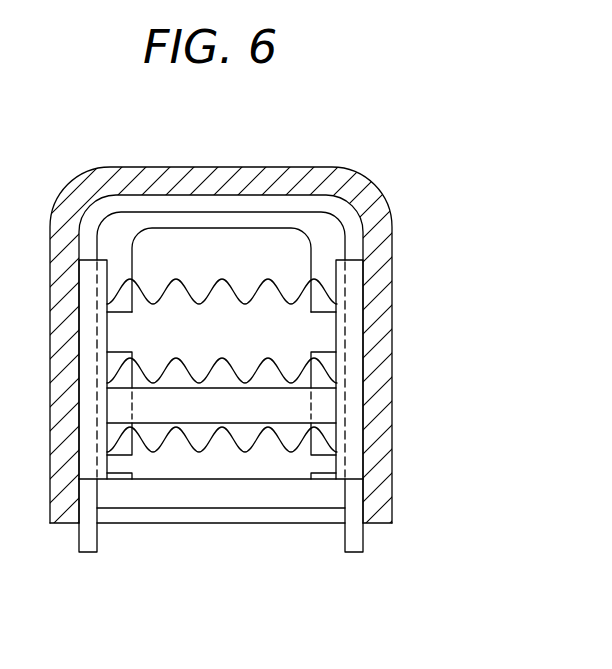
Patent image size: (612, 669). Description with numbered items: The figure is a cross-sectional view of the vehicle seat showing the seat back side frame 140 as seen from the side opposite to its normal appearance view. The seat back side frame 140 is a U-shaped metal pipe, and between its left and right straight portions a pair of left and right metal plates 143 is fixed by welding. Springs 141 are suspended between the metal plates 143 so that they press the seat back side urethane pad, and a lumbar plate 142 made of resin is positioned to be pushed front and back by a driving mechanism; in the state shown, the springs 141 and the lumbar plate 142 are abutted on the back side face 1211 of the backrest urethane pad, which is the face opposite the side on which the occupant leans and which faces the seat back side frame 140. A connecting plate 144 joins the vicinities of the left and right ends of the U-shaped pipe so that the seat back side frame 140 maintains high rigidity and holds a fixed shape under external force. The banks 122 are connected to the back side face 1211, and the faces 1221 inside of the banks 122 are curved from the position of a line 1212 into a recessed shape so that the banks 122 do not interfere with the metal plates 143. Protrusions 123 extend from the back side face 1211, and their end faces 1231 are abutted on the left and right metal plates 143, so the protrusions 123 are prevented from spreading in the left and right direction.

The banks 122 is at (348, 172).
The faces inside of the banks 1221 is at (375, 195).
The seat back side frame 140 is at (286, 398).
The metal plates 143 is at (350, 280).
The connecting plate 144 is at (302, 497).
The back side face 1211 is at (235, 247).
The line 1212 is at (170, 227).
The protrusions 123 is at (323, 332).
The end faces 1231 is at (337, 342).
The lumbar plate 142 is at (165, 407).
The springs 141 is at (240, 443).